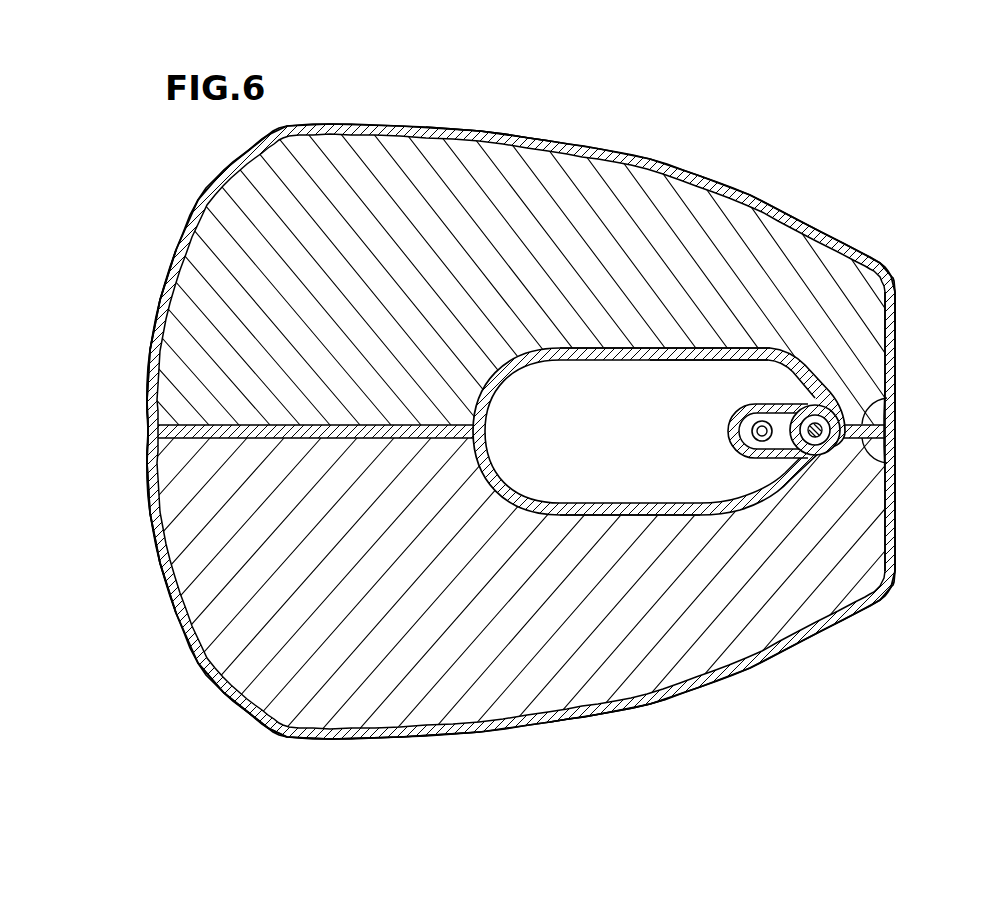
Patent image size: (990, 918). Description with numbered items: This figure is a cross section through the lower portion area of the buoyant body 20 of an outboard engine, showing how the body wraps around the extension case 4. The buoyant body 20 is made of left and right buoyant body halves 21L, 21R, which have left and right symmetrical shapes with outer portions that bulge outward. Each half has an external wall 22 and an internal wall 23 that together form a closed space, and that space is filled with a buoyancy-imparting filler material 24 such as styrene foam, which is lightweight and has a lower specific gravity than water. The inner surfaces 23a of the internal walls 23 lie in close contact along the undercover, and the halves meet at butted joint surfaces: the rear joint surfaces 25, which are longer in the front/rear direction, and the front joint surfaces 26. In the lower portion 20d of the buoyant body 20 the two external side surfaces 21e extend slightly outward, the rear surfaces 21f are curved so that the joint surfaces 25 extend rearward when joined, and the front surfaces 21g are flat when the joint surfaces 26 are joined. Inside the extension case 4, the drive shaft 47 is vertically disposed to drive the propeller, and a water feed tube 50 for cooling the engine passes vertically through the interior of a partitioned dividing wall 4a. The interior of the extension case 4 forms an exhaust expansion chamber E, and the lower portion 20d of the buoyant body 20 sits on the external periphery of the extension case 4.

The buoyant body 20 is at (838, 655).
The lower portion 20d is at (430, 741).
The left buoyant body half 21L is at (620, 150).
The right buoyant body half 21R is at (707, 686).
The external side surface 21e is at (480, 127).
The rear surface 21f is at (161, 310).
The front surface 21g is at (897, 335).
The external wall 22 is at (553, 139).
The internal wall 23 is at (657, 360).
The inner surface 23a is at (572, 367).
The buoyancy-imparting filler material 24 is at (290, 277).
The rear joint surface 25 is at (227, 420).
The front joint surface 26 is at (897, 397).
The extension case 4 is at (615, 365).
The partitioned dividing wall 4a is at (750, 402).
The drive shaft 47 is at (815, 425).
The water feed tube 50 is at (762, 440).
The exhaust expansion chamber E is at (688, 383).